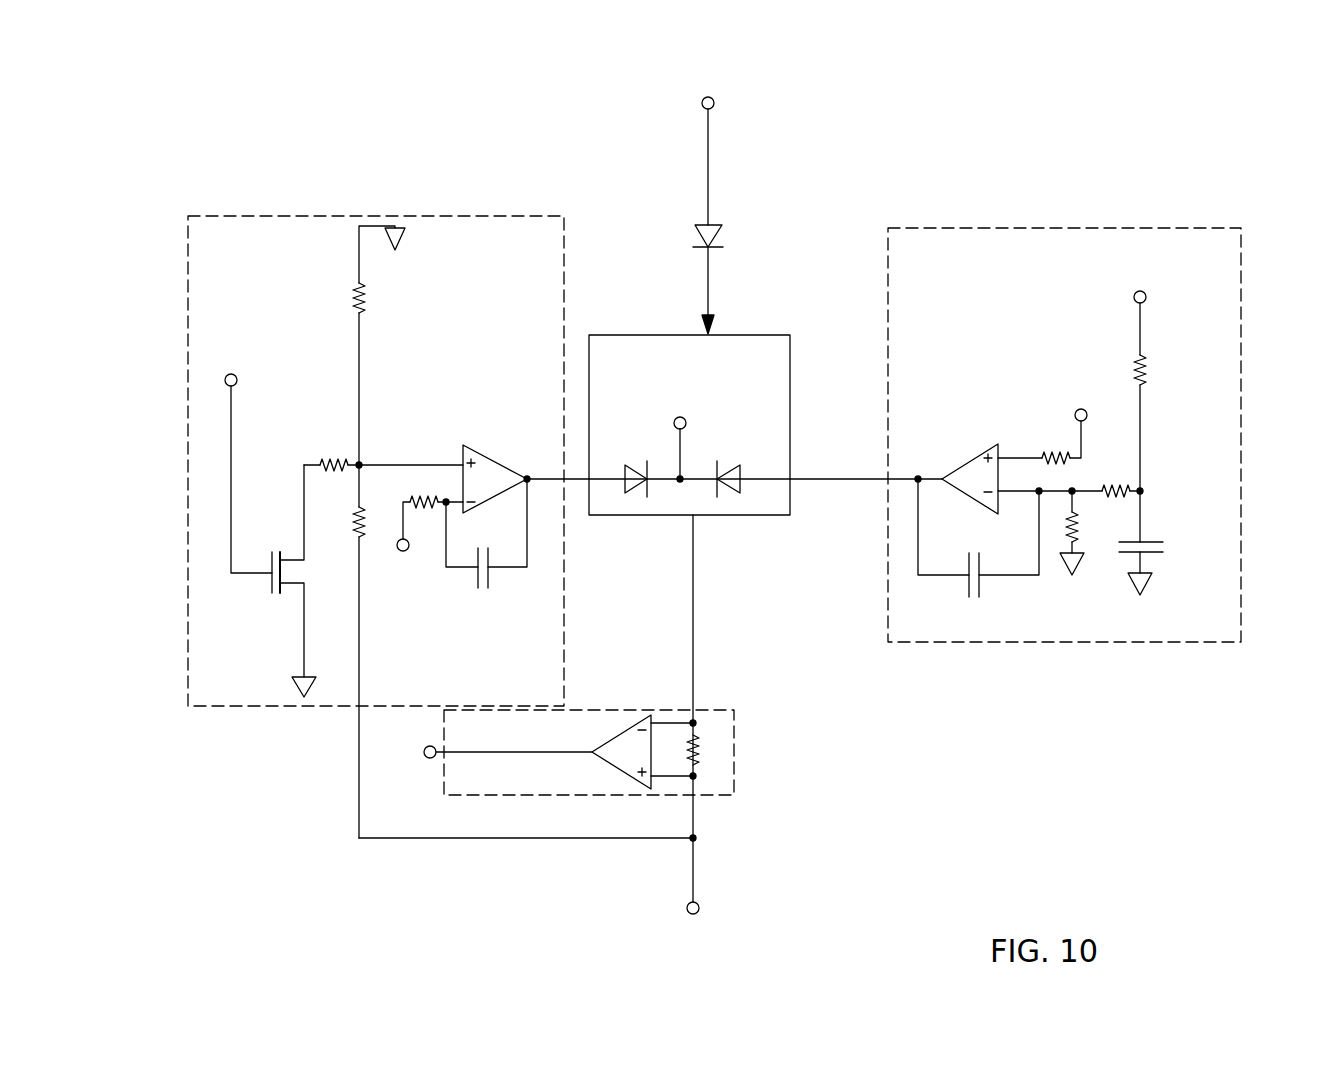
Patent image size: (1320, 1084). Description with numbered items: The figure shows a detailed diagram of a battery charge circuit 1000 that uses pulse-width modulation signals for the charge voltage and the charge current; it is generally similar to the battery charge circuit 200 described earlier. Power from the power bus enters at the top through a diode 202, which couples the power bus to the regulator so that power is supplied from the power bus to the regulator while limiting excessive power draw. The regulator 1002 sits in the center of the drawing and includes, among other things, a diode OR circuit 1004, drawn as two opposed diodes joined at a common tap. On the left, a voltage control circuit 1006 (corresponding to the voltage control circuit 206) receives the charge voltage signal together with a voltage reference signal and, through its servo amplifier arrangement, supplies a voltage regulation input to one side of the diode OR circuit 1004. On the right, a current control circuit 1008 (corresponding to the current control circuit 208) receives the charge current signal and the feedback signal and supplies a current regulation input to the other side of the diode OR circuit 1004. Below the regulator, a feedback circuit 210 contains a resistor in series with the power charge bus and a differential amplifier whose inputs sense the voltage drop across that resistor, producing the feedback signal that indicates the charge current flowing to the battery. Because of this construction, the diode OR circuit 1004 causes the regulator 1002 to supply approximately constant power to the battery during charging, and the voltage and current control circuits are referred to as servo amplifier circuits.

The battery charge circuit 1000 is at (735, 513).
The battery charge circuit 200 is at (1078, 170).
The diode 202 is at (720, 236).
The regulator 1002 is at (689, 396).
The diode OR circuit 1004 is at (694, 452).
The voltage control circuit 1006 is at (376, 496).
The voltage control circuit 206 is at (250, 214).
The current control circuit 1008 is at (1064, 460).
The current control circuit 208 is at (1010, 643).
The feedback circuit 210 is at (735, 751).